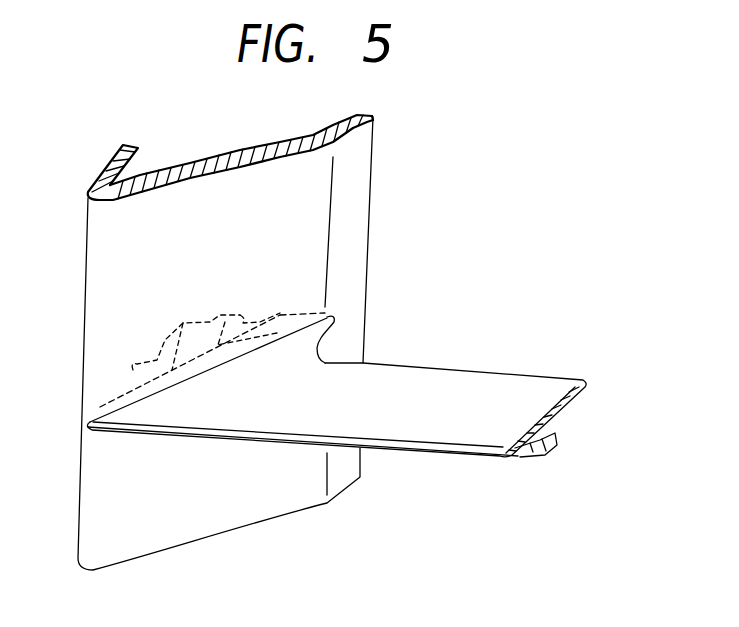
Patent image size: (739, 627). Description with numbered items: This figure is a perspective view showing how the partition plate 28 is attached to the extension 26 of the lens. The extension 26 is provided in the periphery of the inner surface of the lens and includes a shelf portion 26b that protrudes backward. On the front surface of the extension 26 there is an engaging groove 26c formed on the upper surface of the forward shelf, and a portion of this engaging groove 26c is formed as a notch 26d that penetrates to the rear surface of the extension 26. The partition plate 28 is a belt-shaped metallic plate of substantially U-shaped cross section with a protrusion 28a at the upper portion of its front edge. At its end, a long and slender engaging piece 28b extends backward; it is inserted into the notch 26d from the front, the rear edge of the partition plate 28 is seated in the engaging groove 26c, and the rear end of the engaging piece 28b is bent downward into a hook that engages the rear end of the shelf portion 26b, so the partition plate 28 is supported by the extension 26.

The extension 26 is at (340, 240).
The shelf portion 26b is at (165, 340).
The engaging groove 26c is at (333, 320).
The notch 26d is at (205, 362).
The partition plate 28 is at (510, 363).
The protrusion 28a is at (455, 450).
The engaging piece 28b is at (225, 322).